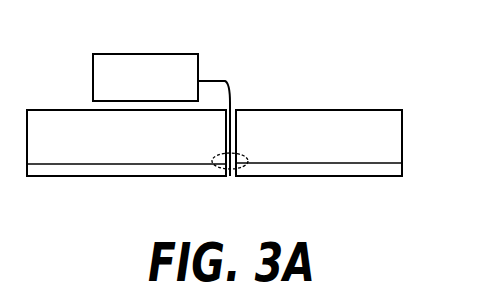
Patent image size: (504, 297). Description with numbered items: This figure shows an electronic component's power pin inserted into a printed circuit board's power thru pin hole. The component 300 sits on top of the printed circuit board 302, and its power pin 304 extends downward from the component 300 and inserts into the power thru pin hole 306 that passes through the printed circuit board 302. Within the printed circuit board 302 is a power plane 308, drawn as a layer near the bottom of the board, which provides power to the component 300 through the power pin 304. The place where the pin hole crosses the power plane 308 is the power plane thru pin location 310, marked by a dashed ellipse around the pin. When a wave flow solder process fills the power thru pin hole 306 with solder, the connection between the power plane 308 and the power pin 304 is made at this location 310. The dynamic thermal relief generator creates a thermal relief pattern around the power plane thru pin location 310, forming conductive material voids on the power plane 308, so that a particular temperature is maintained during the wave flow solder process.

The component 300 is at (137, 63).
The printed circuit board 302 is at (230, 125).
The power pin 304 is at (263, 105).
The power thru pin hole 306 is at (282, 122).
The power plane 308 is at (247, 145).
The power plane thru pin location 310 is at (197, 182).